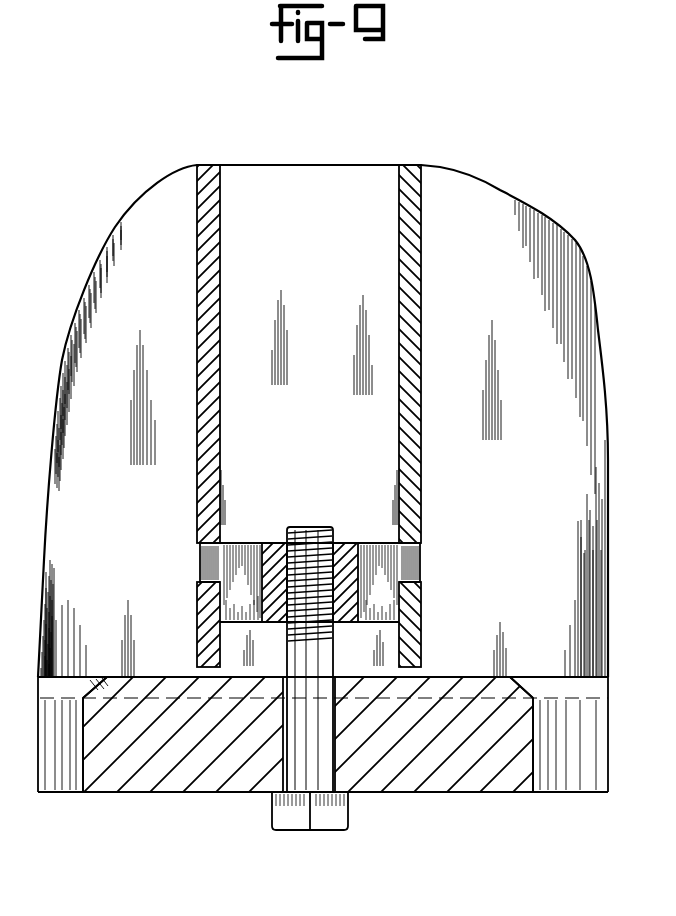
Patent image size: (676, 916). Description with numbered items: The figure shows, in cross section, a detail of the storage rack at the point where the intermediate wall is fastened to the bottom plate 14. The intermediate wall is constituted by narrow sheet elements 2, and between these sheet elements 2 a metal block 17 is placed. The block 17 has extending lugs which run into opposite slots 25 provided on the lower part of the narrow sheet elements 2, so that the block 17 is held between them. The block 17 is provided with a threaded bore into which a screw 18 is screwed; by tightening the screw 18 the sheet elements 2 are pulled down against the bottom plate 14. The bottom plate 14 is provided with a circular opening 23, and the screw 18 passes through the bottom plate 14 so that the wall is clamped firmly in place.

The narrow sheet element 2 is at (395, 240).
The bottom plate 14 is at (174, 757).
The metal block 17 is at (248, 543).
The screw 18 is at (350, 813).
The circular opening 23 is at (570, 767).
The slot 25 is at (420, 566).